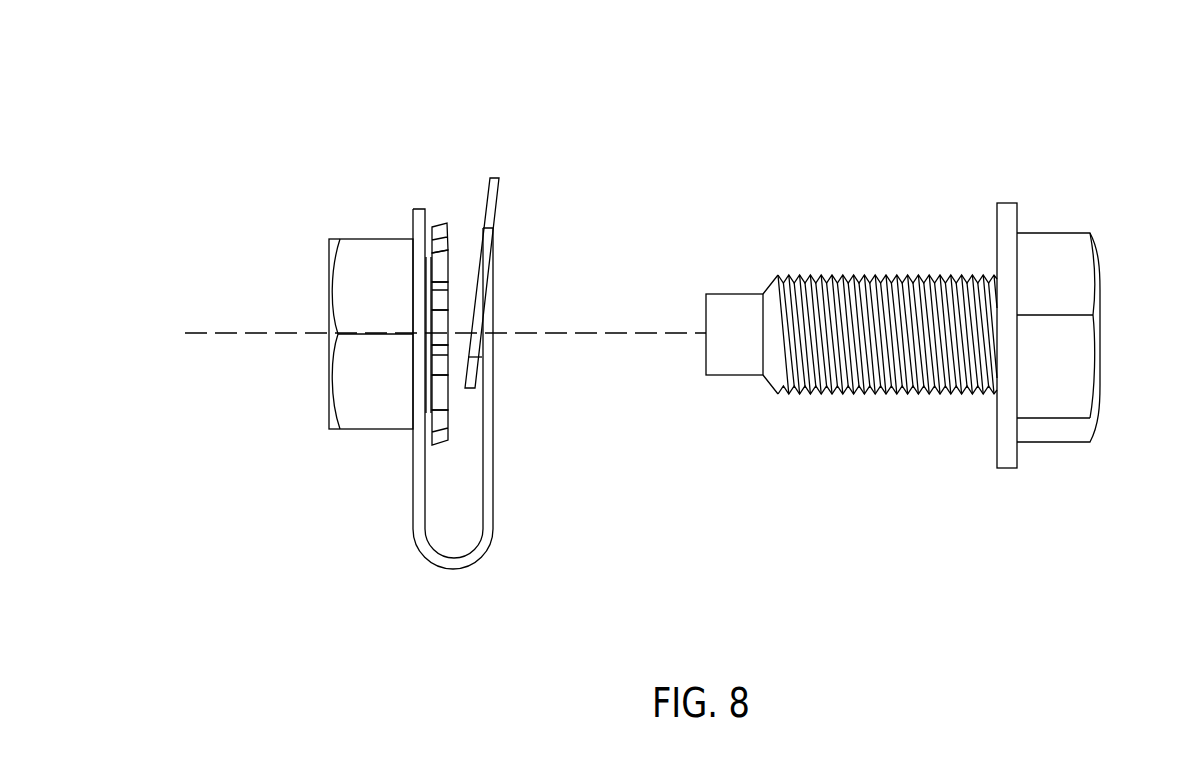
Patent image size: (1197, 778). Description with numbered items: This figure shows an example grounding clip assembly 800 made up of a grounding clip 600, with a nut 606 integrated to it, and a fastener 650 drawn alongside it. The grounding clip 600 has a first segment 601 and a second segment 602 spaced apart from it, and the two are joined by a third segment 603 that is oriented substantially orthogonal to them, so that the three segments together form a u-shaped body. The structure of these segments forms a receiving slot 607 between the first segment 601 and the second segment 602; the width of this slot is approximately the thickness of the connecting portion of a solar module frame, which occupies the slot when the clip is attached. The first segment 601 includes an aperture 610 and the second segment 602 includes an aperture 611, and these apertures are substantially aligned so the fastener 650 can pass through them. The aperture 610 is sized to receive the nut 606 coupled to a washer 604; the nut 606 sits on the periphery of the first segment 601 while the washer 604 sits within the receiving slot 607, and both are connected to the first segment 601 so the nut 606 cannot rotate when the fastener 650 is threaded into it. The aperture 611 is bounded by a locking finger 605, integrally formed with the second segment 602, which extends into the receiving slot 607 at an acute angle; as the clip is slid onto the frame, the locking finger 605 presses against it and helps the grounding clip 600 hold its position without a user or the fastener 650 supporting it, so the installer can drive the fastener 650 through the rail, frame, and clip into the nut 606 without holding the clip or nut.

The grounding clip assembly 800 is at (711, 90).
The grounding clip 600 is at (203, 120).
The first segment 601 is at (420, 200).
The second segment 602 is at (498, 170).
The third segment 603 is at (453, 580).
The washer 604 is at (432, 437).
The locking finger 605 is at (470, 372).
The nut 606 is at (318, 432).
The receiving slot 607 is at (465, 235).
The aperture 610 is at (326, 326).
The aperture 611 is at (500, 325).
The fastener 650 is at (1088, 172).